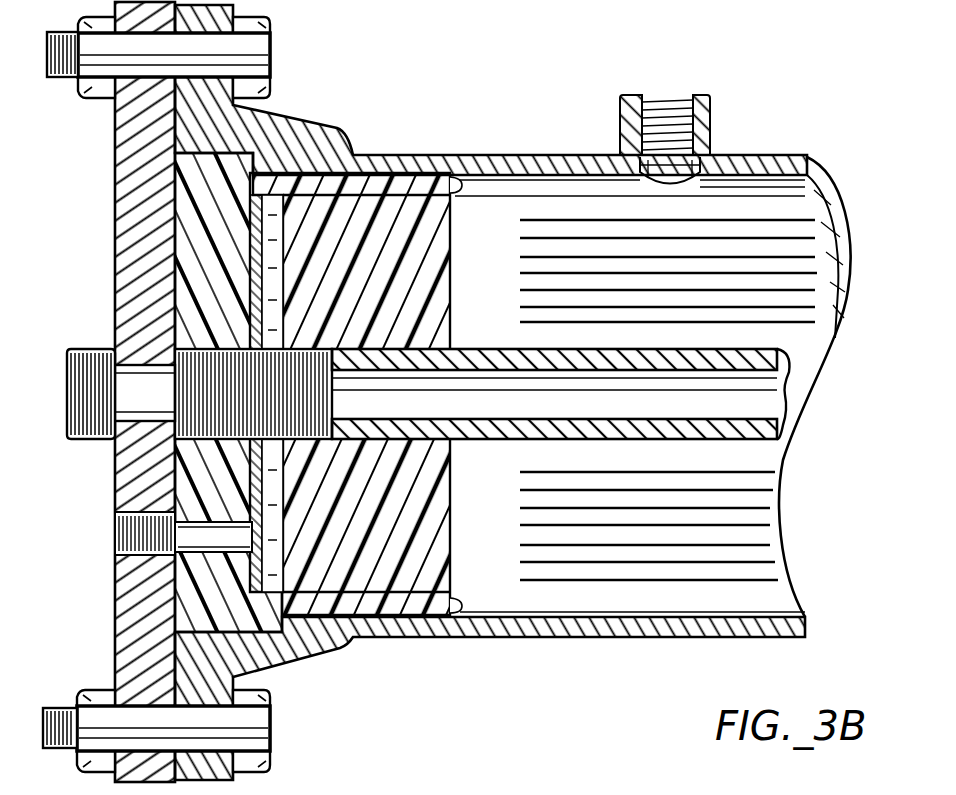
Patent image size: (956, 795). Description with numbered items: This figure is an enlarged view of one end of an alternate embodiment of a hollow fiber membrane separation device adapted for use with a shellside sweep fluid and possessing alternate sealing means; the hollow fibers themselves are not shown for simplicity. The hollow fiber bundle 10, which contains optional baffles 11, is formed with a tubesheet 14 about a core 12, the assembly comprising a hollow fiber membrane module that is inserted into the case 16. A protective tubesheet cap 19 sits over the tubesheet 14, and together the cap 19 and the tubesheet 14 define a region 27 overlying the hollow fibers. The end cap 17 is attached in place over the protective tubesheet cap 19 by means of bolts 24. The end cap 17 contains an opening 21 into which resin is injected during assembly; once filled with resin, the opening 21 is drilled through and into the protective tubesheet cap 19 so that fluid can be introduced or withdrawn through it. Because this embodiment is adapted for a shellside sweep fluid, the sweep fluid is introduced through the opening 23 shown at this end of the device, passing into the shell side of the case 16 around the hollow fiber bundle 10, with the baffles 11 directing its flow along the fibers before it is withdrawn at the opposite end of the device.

The hollow fiber bundle 10 is at (540, 273).
The baffles 11 is at (763, 305).
The core 12 is at (753, 352).
The tubesheet 14 is at (373, 203).
The case 16 is at (687, 630).
The end cap 17 is at (123, 662).
The protective tubesheet cap 19 is at (243, 217).
The opening 21 is at (117, 530).
The opening 23 is at (97, 441).
The bolts 24 is at (268, 20).
The region 27 is at (270, 285).